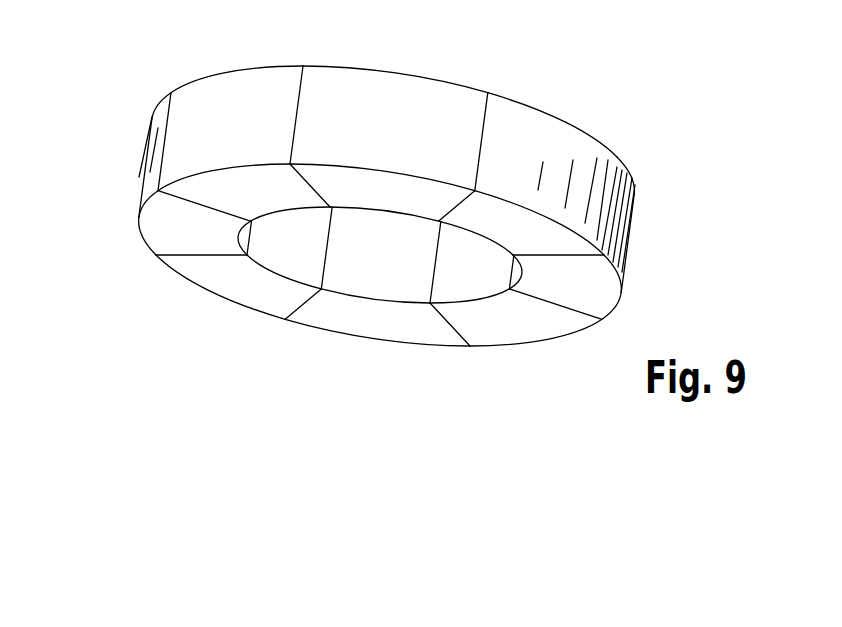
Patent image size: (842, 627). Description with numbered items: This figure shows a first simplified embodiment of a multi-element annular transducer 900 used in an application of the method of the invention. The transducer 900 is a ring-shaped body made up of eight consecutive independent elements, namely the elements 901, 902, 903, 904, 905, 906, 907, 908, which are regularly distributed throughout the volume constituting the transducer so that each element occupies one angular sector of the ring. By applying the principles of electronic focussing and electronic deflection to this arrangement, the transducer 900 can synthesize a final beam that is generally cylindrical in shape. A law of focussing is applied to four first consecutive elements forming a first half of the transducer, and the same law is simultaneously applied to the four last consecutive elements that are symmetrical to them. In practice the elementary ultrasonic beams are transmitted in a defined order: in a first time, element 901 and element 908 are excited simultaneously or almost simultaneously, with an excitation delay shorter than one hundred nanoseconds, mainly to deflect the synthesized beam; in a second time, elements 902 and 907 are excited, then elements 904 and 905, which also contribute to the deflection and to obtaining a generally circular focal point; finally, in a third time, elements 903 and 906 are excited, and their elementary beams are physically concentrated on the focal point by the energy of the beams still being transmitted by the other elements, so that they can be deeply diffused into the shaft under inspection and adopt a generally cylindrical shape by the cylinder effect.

The multi-element annular transducer 900 is at (379, 207).
The transducer element 901 is at (373, 110).
The transducer element 902 is at (525, 140).
The transducer element 903 is at (593, 293).
The transducer element 904 is at (515, 323).
The transducer element 905 is at (388, 323).
The transducer element 906 is at (245, 283).
The transducer element 907 is at (188, 228).
The transducer element 908 is at (230, 105).